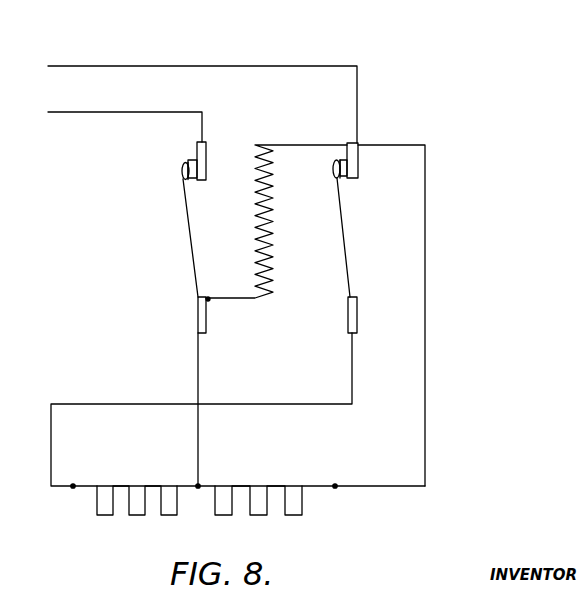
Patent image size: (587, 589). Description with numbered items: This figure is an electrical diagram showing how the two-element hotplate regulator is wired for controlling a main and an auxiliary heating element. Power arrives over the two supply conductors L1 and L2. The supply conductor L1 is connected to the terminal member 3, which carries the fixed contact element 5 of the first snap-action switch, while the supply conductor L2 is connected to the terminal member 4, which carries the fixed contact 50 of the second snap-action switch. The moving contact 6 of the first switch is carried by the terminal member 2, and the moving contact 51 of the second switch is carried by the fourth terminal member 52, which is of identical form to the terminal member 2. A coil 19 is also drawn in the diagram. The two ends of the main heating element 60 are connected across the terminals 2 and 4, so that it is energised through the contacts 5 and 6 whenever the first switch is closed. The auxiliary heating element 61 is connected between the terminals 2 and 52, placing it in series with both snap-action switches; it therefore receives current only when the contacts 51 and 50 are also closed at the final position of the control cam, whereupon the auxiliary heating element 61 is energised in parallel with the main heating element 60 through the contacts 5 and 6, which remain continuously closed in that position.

The supply conductor L1 is at (62, 113).
The supply conductor L2 is at (216, 66).
The terminal member 2 is at (206, 322).
The terminal member 3 is at (206, 160).
The terminal member 4 is at (358, 165).
The contact element 5 is at (188, 160).
The moving contact 6 is at (181, 172).
The relay coil 19 is at (272, 258).
The fixed contact 50 is at (342, 178).
The moving contact 51 is at (333, 172).
The fourth terminal member 52 is at (357, 316).
The main heating element 60 is at (256, 516).
The auxiliary heating element 61 is at (137, 515).